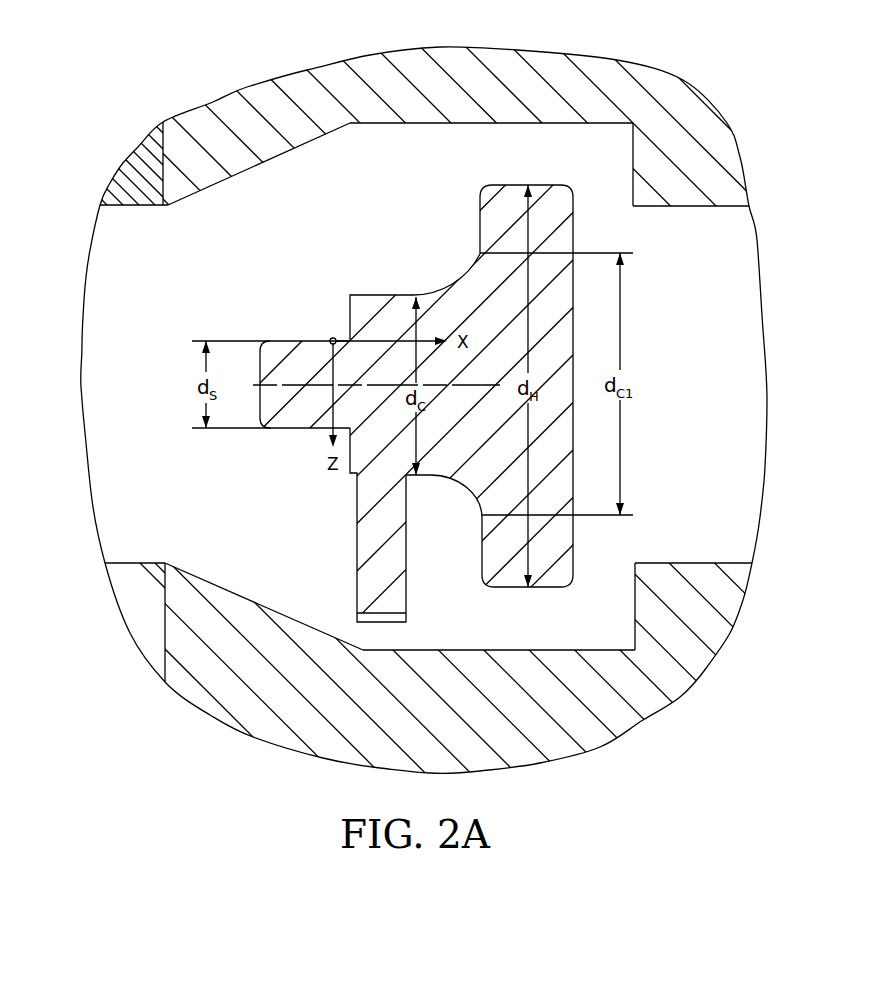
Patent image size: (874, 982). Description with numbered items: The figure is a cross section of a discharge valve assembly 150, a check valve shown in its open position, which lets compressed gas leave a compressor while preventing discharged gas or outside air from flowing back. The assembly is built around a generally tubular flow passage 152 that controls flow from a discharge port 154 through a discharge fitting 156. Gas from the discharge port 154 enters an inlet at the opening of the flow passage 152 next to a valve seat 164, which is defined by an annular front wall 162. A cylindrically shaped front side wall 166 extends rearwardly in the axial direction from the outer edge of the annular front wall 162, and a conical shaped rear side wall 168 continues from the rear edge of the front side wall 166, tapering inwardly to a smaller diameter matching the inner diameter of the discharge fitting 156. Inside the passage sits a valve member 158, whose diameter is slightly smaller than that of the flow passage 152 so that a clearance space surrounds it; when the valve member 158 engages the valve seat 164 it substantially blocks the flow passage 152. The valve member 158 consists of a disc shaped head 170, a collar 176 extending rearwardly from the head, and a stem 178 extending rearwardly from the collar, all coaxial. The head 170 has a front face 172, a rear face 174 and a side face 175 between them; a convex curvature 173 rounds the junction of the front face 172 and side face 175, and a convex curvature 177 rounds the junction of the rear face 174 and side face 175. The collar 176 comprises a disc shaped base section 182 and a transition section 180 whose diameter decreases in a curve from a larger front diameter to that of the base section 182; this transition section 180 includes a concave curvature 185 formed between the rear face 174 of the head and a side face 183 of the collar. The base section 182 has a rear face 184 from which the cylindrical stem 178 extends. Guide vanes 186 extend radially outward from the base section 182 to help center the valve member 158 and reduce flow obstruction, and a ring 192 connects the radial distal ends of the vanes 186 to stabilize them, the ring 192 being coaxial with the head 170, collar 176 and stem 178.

The discharge valve assembly 150 is at (143, 182).
The flow passage 152 is at (617, 552).
The discharge port 154 is at (670, 462).
The discharge fitting 156 is at (148, 385).
The valve member 158 is at (233, 270).
The annular front wall 162 is at (640, 175).
The valve seat 164 is at (642, 206).
The front side wall 166 is at (541, 651).
The rear side wall 168 is at (252, 592).
The head 170 is at (570, 188).
The front face 172 is at (574, 225).
The convex curvature 173 is at (575, 205).
The rear face 174 is at (450, 478).
The side face 175 is at (548, 182).
The collar 176 is at (427, 260).
The convex curvature 177 is at (487, 186).
The stem 178 is at (322, 338).
The transition section 180 is at (452, 283).
The base section 182 is at (415, 295).
The side face 183 is at (407, 622).
The rear face 184 is at (350, 305).
The concave curvature 185 is at (432, 477).
The guide vanes 186 is at (357, 583).
The ring 192 is at (381, 619).